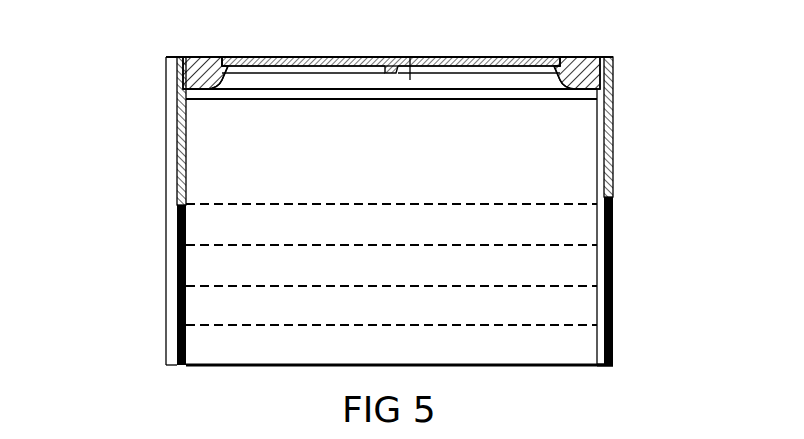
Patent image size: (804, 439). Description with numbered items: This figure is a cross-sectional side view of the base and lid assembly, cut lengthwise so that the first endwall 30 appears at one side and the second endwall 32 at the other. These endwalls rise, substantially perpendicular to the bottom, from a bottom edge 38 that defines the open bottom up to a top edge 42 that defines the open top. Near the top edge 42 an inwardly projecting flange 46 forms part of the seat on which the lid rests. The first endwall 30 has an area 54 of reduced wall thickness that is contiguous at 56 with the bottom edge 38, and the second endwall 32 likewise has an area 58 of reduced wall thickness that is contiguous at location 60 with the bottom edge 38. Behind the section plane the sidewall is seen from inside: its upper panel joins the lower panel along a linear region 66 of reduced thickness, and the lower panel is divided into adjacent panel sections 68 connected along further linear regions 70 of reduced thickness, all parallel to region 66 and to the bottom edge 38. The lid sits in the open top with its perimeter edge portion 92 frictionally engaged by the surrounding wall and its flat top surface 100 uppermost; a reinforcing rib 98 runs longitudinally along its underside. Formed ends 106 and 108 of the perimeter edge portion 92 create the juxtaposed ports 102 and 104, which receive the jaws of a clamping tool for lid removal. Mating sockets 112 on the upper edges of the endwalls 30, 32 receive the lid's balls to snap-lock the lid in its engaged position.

The first endwall 30 is at (150, 183).
The second endwall 32 is at (619, 163).
The bottom edge 38 is at (172, 366).
The top edge 42 is at (181, 58).
The inwardly projecting flange 46 is at (423, 90).
The area of reduced wall thickness 54 is at (180, 257).
The contiguous location 56 is at (182, 366).
The area of reduced wall thickness 58 is at (612, 318).
The contiguous location 60 is at (610, 366).
The linear region of reduced wall thickness 66 is at (272, 204).
The panel sections 68 is at (470, 288).
The linear regions of reduced thickness 70 is at (270, 245).
The perimeter edge portion 92 is at (411, 56).
The reinforcing rib 98 is at (383, 56).
The top surface 100 is at (298, 56).
The juxtaposed ports 102 is at (561, 55).
The juxtaposed ports 104 is at (206, 55).
The formed end 106 is at (560, 82).
The formed end 108 is at (218, 90).
The mating sockets 112 is at (181, 72).